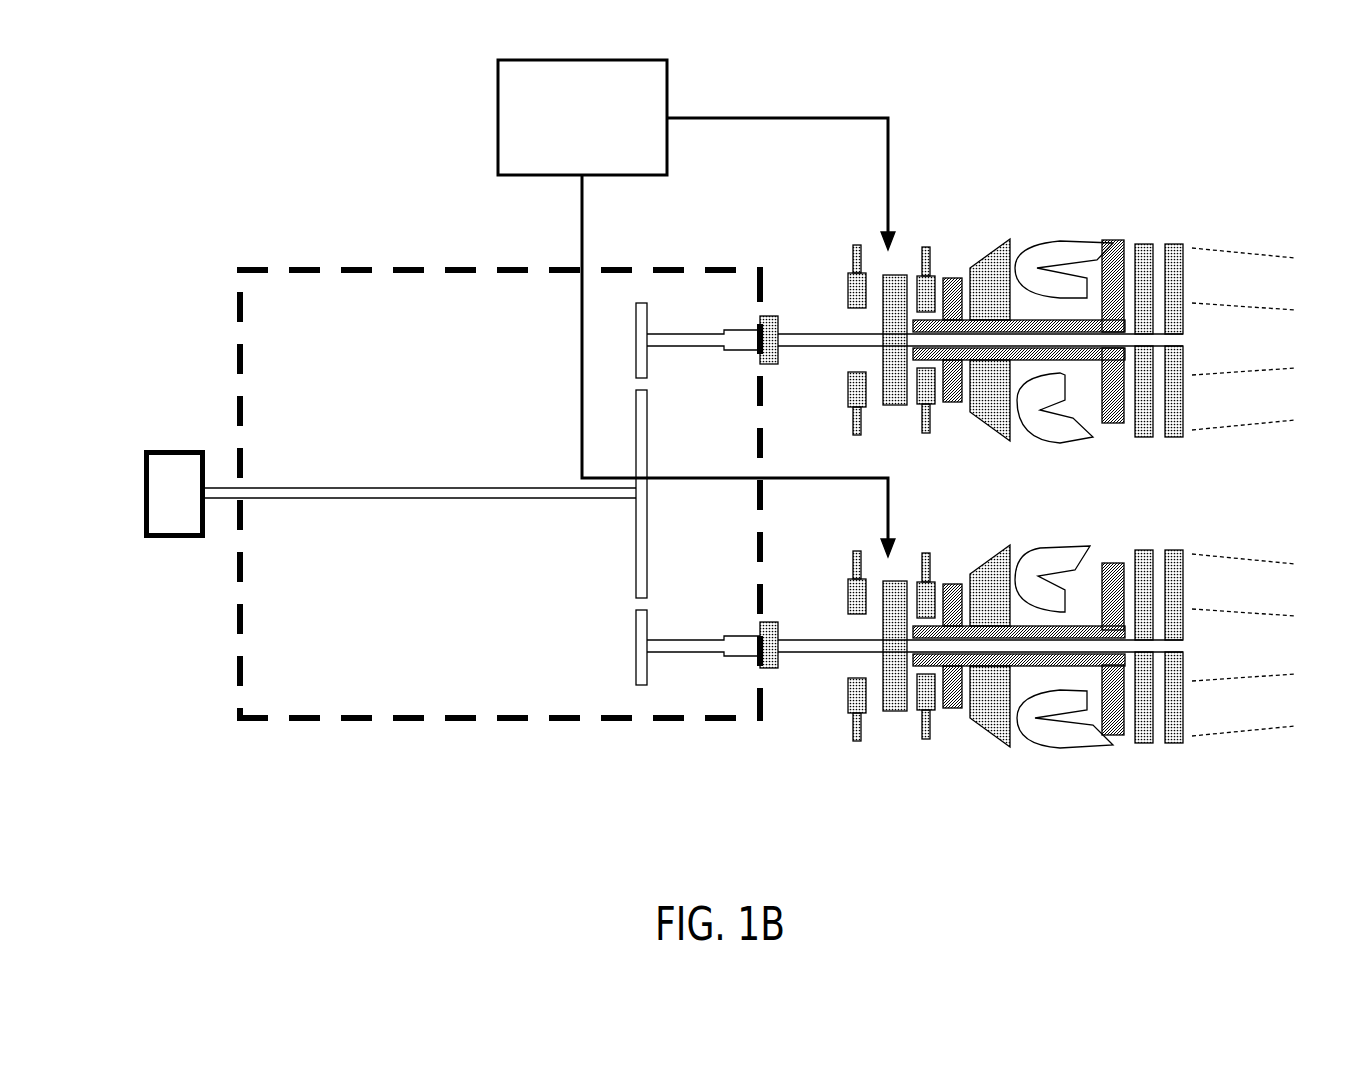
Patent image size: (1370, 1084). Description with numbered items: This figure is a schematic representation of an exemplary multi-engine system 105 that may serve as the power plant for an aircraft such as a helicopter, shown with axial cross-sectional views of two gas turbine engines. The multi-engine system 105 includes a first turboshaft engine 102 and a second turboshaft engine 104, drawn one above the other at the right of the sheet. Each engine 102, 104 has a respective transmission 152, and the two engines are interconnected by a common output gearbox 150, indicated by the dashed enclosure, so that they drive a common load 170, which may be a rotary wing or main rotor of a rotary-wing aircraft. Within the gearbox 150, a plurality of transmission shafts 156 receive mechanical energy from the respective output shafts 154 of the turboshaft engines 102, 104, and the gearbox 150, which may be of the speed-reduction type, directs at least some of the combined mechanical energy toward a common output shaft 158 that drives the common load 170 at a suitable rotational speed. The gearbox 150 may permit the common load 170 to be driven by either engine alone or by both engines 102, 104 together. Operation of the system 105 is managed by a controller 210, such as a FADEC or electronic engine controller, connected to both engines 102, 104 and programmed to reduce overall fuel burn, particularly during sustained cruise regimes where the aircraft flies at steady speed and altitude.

The first turboshaft engine 102 is at (1104, 191).
The second turboshaft engine 104 is at (1106, 797).
The multi-engine system 105 is at (306, 195).
The common output gearbox 150 is at (458, 723).
The transmission 152 is at (733, 368).
The output shaft 154 is at (833, 407).
The transmission shaft 156 is at (688, 333).
The common output shaft 158 is at (223, 500).
The common load 170 is at (177, 450).
The controller 210 is at (608, 153).